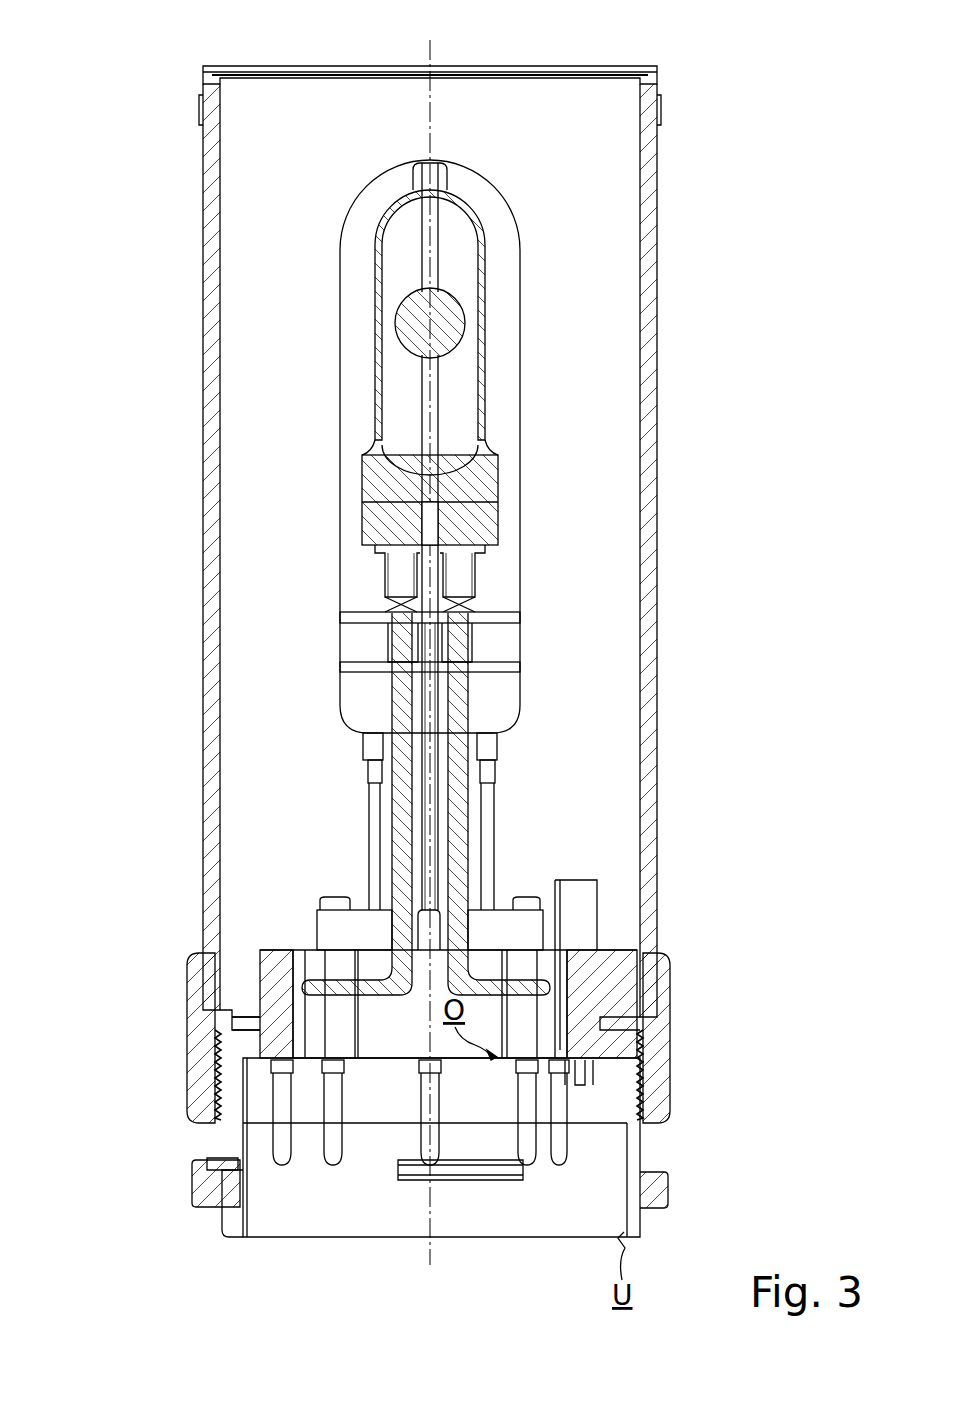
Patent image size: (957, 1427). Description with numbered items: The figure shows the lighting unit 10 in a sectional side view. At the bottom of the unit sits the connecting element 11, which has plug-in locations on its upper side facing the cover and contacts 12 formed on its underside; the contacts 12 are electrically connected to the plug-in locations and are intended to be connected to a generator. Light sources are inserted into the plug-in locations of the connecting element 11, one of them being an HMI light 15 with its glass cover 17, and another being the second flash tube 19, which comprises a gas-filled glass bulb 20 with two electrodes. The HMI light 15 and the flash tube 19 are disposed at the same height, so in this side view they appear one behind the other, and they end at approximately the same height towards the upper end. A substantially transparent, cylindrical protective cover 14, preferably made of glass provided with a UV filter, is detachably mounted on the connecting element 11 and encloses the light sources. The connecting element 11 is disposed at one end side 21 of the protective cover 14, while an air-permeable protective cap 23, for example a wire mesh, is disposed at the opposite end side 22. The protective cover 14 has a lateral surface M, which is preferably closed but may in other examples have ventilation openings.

The lighting unit 10 is at (745, 86).
The connecting element 11 is at (668, 1140).
The contacts 12 is at (522, 1100).
The protective cover 14 is at (672, 214).
The HMI light 15 is at (465, 252).
The glass cover 17 is at (485, 318).
The second flash tube 19 is at (330, 534).
The glass bulb 20 is at (340, 320).
The end side 21 is at (170, 1023).
The end side 22 is at (192, 76).
The protective cap 23 is at (588, 66).
The lateral surface M is at (656, 460).